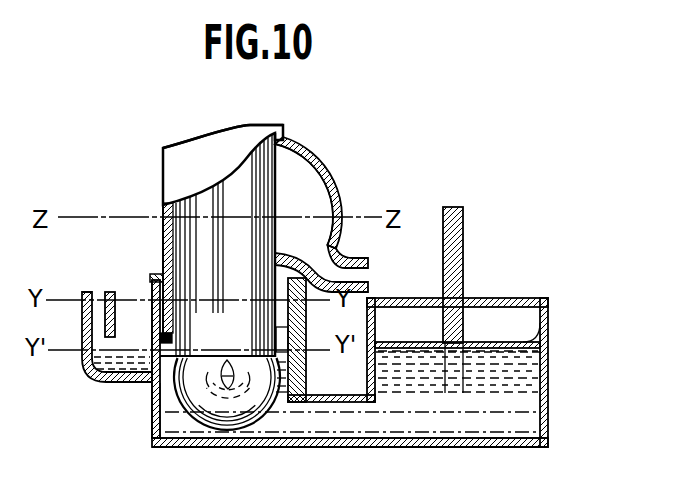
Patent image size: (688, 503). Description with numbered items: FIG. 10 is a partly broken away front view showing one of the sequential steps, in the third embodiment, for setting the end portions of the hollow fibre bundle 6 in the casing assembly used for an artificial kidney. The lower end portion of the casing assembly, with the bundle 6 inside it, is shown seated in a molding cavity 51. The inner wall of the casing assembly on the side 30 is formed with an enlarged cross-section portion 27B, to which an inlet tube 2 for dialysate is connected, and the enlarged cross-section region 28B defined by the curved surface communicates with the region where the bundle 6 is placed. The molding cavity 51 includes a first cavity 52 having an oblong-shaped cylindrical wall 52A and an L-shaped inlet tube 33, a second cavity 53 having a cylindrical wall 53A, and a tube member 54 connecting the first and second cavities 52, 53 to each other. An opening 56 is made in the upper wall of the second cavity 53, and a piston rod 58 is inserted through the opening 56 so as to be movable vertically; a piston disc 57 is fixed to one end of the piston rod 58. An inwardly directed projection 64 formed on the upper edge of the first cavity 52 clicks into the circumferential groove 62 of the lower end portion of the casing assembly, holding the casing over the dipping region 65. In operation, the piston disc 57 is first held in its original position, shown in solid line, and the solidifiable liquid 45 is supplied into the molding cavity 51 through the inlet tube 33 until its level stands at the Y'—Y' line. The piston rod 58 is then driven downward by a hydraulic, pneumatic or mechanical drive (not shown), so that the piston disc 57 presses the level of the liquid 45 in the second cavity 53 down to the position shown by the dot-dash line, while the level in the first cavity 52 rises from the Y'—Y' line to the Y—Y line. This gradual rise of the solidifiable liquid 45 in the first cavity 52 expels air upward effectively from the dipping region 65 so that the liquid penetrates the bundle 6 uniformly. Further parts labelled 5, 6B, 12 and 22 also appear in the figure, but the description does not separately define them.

The inlet tube for dialysate 2 is at (369, 273).
The lamp filament stripes 5 is at (262, 181).
The hollow fibre bundle 6 is at (278, 158).
The lens dome 6B is at (229, 408).
The base plate 12 is at (278, 397).
The reflector ring interior 22 is at (319, 235).
The enlarged cross-section portion 27B is at (338, 184).
The enlarged cross-section region 28B is at (314, 169).
The side of casing assembly 30 is at (163, 182).
The L-shaped inlet tube 33 is at (82, 293).
The solidifiable liquid 45 is at (183, 432).
The molding cavity 51 is at (149, 430).
The first cavity 52 is at (350, 462).
The oblong-shaped cylindrical wall 52A is at (148, 338).
The second cavity 53 is at (549, 402).
The cylindrical wall 53A is at (547, 355).
The tube member 54 is at (340, 395).
The opening 56 is at (464, 293).
The piston disc 57 is at (543, 331).
The piston rod 58 is at (464, 213).
The circumferential groove 62 is at (160, 274).
The inwardly directed projection 64 is at (153, 281).
The dipping region 65 is at (152, 321).